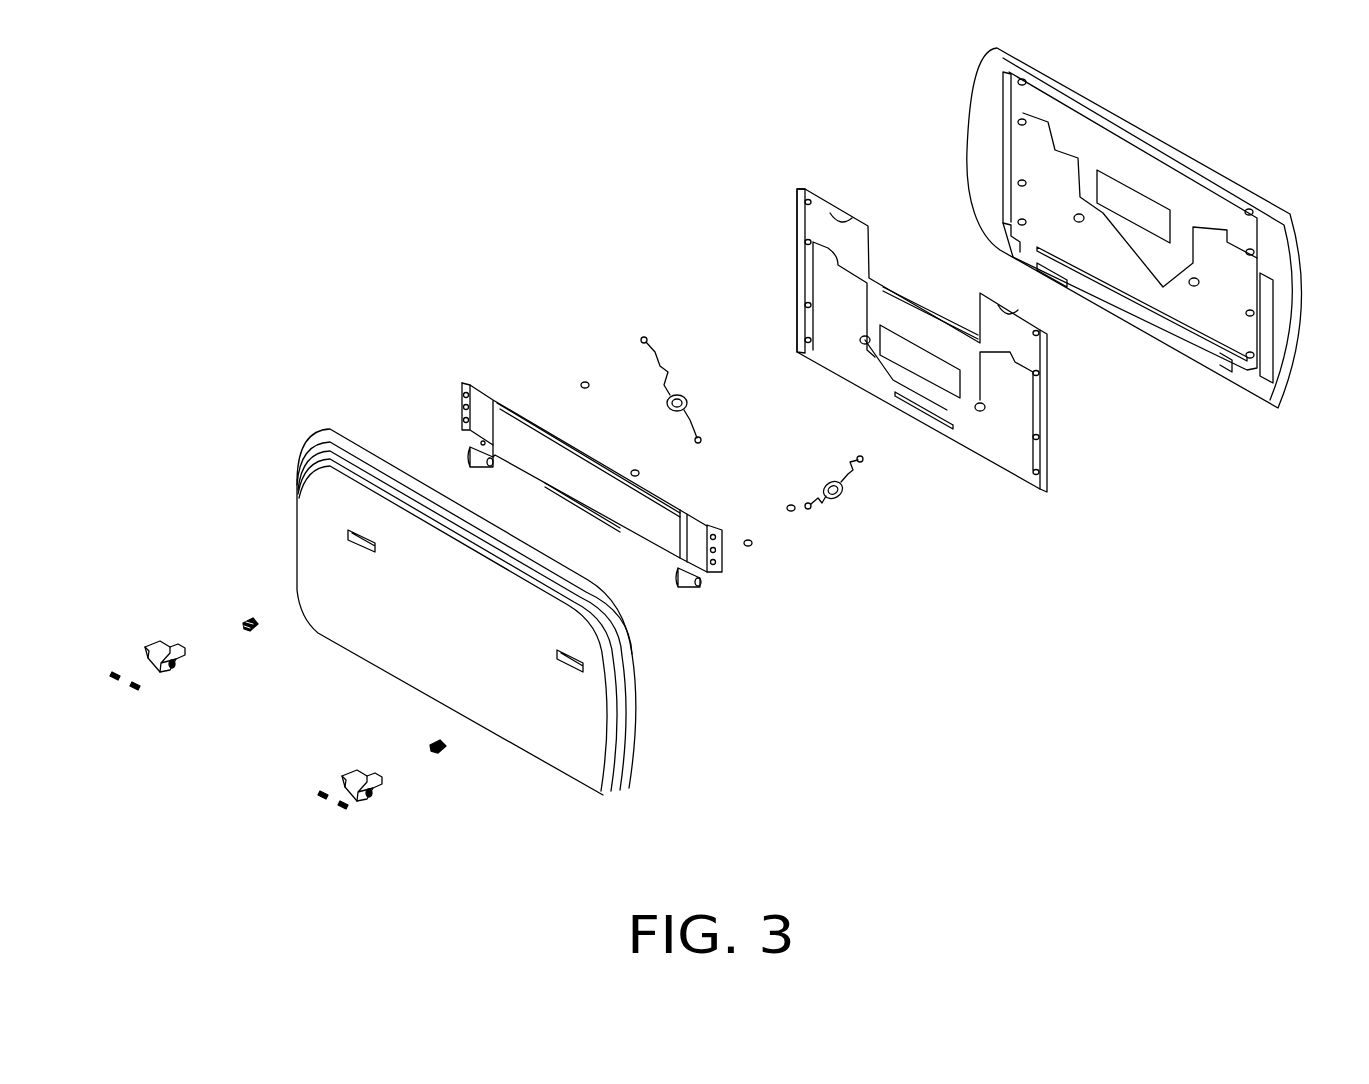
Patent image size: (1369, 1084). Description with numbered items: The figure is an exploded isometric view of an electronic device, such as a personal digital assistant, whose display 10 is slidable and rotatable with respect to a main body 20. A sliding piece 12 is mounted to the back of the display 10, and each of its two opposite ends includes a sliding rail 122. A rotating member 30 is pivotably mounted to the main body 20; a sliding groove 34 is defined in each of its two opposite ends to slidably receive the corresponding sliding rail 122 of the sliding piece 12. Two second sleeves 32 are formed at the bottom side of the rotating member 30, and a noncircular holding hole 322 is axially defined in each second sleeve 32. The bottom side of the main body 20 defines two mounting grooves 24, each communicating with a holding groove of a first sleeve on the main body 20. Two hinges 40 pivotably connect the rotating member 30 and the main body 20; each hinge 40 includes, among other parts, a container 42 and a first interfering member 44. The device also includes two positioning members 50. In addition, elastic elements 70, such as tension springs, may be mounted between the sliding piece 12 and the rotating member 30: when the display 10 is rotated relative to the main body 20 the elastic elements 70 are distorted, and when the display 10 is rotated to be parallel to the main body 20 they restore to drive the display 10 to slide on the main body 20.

The display 10 is at (1268, 237).
The sliding piece 12 is at (932, 344).
The sliding rail 122 is at (798, 228).
The main body 20 is at (414, 612).
The mounting groove 24 is at (350, 538).
The rotating member 30 is at (632, 492).
The second sleeve 32 is at (635, 552).
The holding hole 322 is at (700, 582).
The sliding groove 34 is at (717, 528).
The hinge 40 is at (443, 743).
The container 42 is at (255, 619).
The first interfering member 44 is at (245, 620).
The positioning member 50 is at (143, 618).
The elastic element 70 is at (660, 356).